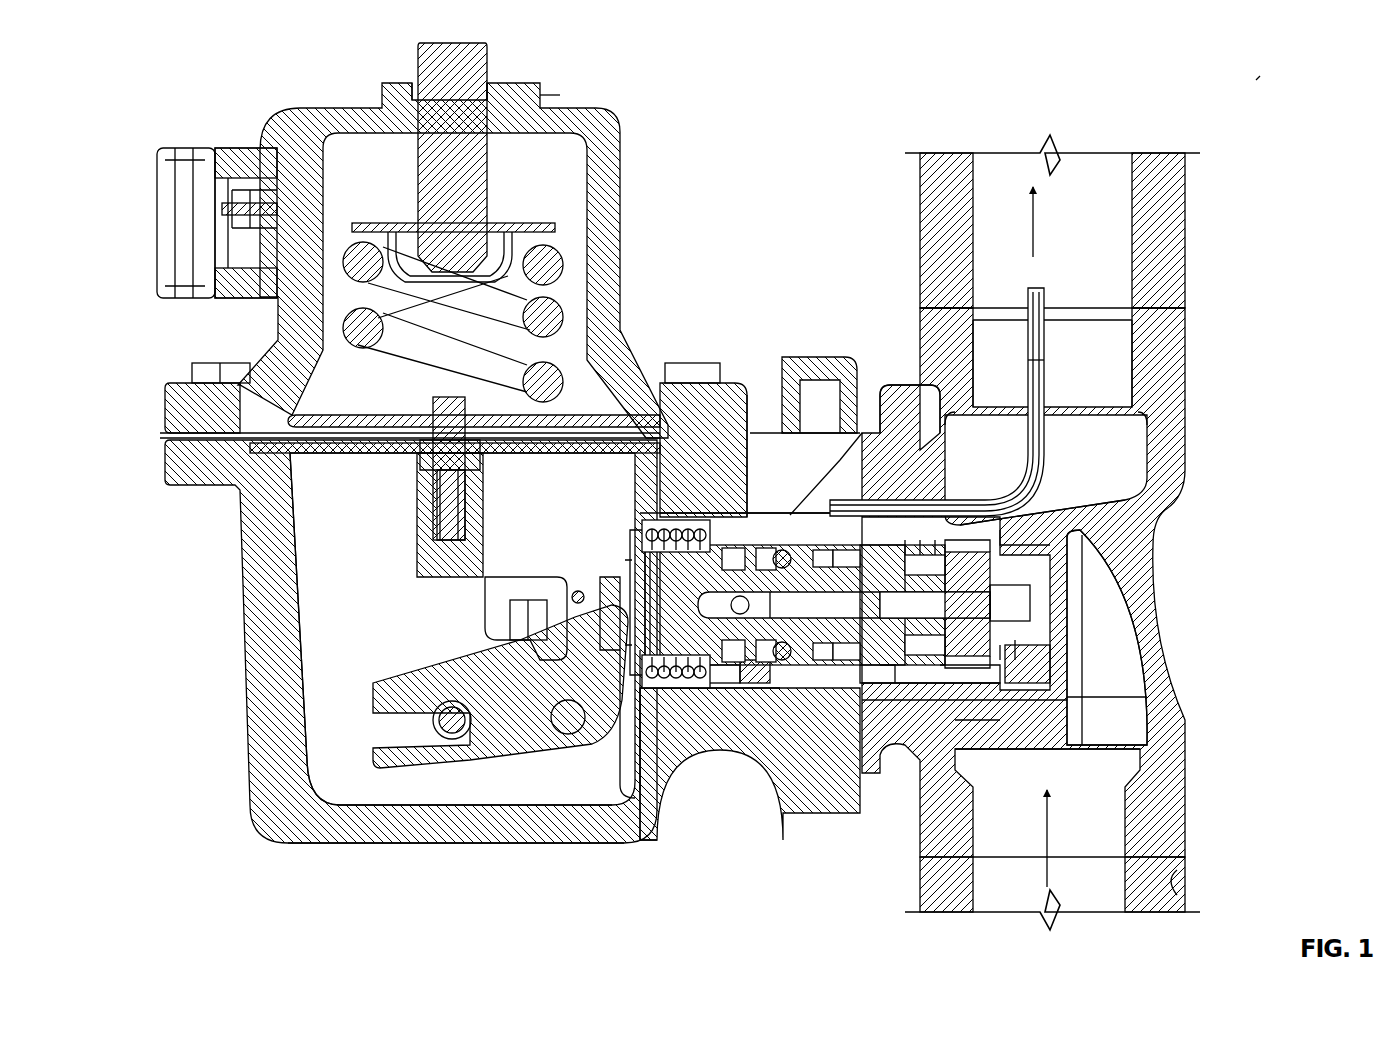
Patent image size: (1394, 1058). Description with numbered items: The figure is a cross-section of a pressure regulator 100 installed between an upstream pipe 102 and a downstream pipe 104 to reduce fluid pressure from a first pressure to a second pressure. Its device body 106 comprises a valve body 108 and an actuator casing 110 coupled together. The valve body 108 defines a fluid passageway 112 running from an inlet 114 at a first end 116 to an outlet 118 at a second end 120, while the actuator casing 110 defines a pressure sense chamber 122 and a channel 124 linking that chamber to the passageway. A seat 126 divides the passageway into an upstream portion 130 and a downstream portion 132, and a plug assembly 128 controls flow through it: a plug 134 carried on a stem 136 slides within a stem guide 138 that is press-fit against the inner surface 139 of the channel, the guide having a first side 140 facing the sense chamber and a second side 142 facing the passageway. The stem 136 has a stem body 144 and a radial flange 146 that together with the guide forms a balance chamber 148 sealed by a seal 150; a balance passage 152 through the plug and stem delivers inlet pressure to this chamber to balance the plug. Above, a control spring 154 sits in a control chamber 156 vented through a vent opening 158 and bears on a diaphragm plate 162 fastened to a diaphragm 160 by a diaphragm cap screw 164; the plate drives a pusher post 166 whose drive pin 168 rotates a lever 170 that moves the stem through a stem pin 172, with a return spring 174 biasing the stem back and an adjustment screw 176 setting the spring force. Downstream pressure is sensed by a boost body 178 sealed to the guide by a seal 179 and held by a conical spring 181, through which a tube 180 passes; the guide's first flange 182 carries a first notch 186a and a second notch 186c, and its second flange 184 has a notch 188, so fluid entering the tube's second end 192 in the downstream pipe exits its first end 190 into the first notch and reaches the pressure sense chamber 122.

The pressure regulator 100 is at (1260, 78).
The upstream pipe 102 is at (1182, 906).
The downstream pipe 104 is at (1178, 196).
The device body 106 is at (580, 836).
The valve body 108 is at (1165, 411).
The actuator casing 110 is at (255, 631).
The fluid passageway 112 is at (1047, 799).
The inlet 114 is at (1097, 866).
The first end 116 is at (1180, 896).
The outlet 118 is at (1098, 291).
The second end 120 is at (1160, 301).
The pressure sense chamber 122 is at (300, 541).
The channel 124 is at (668, 526).
The seat 126 is at (1080, 536).
The plug assembly 128 is at (725, 526).
The upstream portion 130 is at (1115, 646).
The downstream portion 132 is at (1115, 371).
The plug 134 is at (975, 601).
The stem 136 is at (873, 601).
The stem guide 138 is at (640, 526).
The inner surface 139 is at (645, 691).
The first side 140 is at (700, 669).
The second side 142 is at (840, 701).
The stem body 144 is at (830, 601).
The flange 146 is at (807, 698).
The balance chamber 148 is at (748, 661).
The seal 150 is at (782, 666).
The balance passage 152 is at (905, 581).
The control spring 154 is at (562, 271).
The control chamber 156 is at (560, 196).
The vent opening 158 is at (272, 241).
The diaphragm 160 is at (222, 380).
The diaphragm plate 162 is at (325, 412).
The diaphragm cap screw 164 is at (452, 412).
The pusher post 166 is at (435, 552).
The drive pin 168 is at (452, 729).
The lever 170 is at (518, 746).
The stem pin 172 is at (630, 569).
The return spring 174 is at (652, 521).
The adjustment screw 176 is at (432, 86).
The boost body 178 is at (875, 691).
The seal 179 is at (875, 666).
The tube 180 is at (1022, 293).
The spring 181 is at (1035, 686).
The first flange 182 is at (818, 701).
The second flange 184 is at (735, 691).
The first notch 186a is at (758, 526).
The second notch 186c is at (772, 701).
The notch 188 is at (690, 526).
The first end 190 is at (793, 526).
The second end 192 is at (1032, 361).